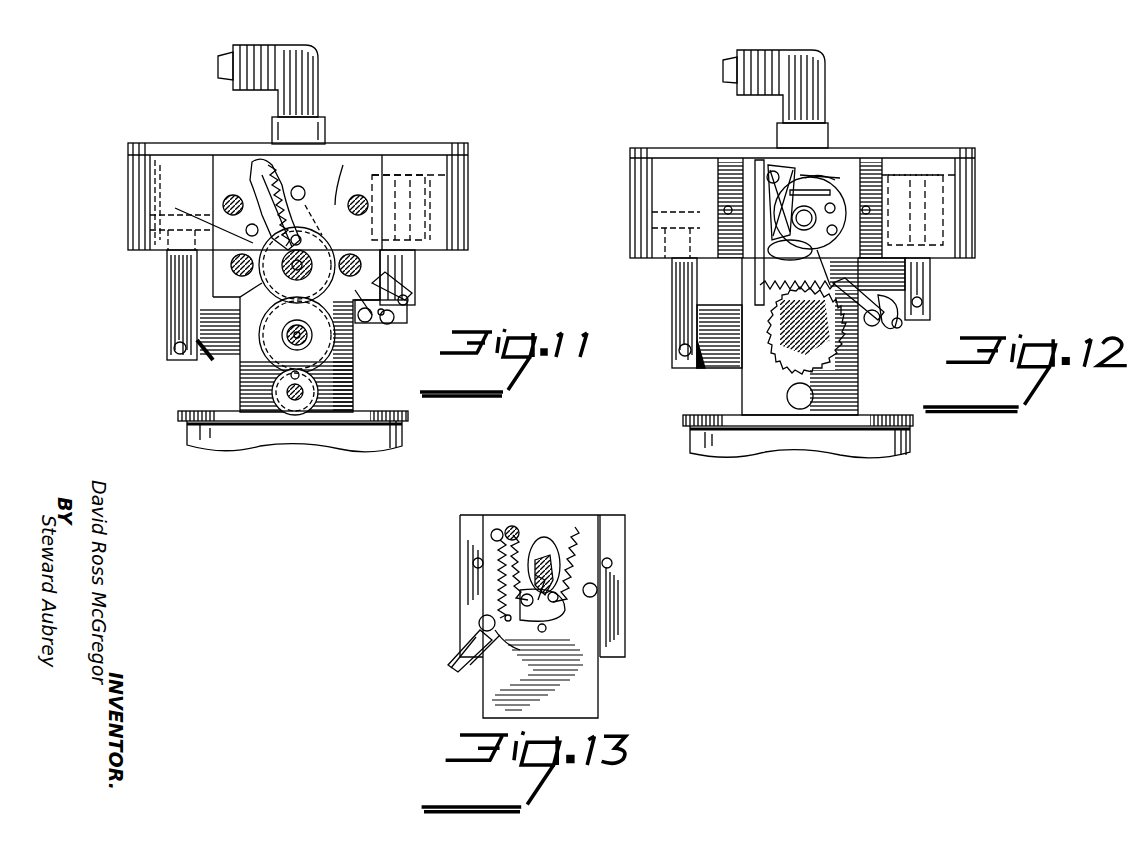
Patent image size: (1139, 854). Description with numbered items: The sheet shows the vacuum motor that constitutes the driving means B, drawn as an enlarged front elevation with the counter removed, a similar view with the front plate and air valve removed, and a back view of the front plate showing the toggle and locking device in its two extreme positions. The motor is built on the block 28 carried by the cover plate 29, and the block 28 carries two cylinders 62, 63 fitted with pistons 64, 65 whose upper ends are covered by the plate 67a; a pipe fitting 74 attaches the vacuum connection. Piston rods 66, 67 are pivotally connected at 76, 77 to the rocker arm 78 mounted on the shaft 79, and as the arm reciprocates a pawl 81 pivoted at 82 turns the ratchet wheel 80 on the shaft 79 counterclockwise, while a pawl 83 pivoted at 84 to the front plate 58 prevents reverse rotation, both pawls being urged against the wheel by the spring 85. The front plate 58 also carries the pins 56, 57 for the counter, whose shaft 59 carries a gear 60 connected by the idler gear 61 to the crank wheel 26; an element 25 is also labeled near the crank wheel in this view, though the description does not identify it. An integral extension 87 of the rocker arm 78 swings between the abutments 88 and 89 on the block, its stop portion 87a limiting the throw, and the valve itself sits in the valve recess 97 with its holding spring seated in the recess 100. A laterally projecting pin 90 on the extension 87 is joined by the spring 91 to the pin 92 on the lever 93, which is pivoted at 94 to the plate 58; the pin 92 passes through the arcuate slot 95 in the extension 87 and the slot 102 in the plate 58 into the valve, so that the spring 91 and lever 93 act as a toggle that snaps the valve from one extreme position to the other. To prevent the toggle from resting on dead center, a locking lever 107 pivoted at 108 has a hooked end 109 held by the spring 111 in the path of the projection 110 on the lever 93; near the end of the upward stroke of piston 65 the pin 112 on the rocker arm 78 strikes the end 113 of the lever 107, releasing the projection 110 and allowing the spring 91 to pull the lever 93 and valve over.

In FIG. 11, the pipe fitting 74 is at (285, 62).
In FIG. 12, the pipe fitting 74 is at (790, 65).
In FIG. 11, the laterally projecting pin 90 is at (270, 163).
In FIG. 12, the laterally projecting pin 90 is at (777, 170).
In FIG. 13, the laterally projecting pin 90 is at (505, 530).
In FIG. 11, the spring 91 is at (275, 185).
In FIG. 13, the spring 91 is at (522, 553).
In FIG. 11, the pin 92 is at (287, 240).
In FIG. 13, the pin 92 is at (528, 600).
In FIG. 11, the extension 87 is at (283, 232).
In FIG. 12, the extension 87 is at (805, 175).
In FIG. 12, the stop portion 87a is at (748, 172).
In FIG. 11, the lever 93 is at (305, 198).
In FIG. 13, the lever 93 is at (542, 553).
In FIG. 11, the front plate 58 is at (363, 170).
In FIG. 13, the front plate 58 is at (525, 527).
In FIG. 11, the plate 67a is at (430, 152).
In FIG. 12, the plate 67a is at (937, 157).
In FIG. 11, the cylinder 62 is at (140, 191).
In FIG. 11, the pivot 94 is at (302, 190).
In FIG. 13, the pivot 94 is at (560, 540).
In FIG. 11, the slot 102 is at (302, 233).
In FIG. 13, the slot 102 is at (557, 587).
In FIG. 11, the cylinder 63 is at (438, 190).
In FIG. 11, the piston 65 is at (432, 186).
In FIG. 12, the piston 65 is at (895, 200).
In FIG. 11, the arcuate slot 95 is at (175, 208).
In FIG. 12, the arcuate slot 95 is at (845, 250).
In FIG. 11, the gear 60 is at (312, 252).
In FIG. 11, the piston 64 is at (167, 235).
In FIG. 12, the piston 64 is at (668, 227).
In FIG. 11, the pin 56 is at (231, 268).
In FIG. 11, the pin 57 is at (362, 259).
In FIG. 11, the piston rod 66 is at (180, 300).
In FIG. 12, the piston rod 66 is at (680, 277).
In FIG. 11, the idler gear 61 is at (278, 313).
In FIG. 11, the piston rod 67 is at (420, 278).
In FIG. 12, the piston rod 67 is at (920, 273).
In FIG. 11, the locking lever 107 is at (385, 278).
In FIG. 13, the locking lever 107 is at (450, 655).
In FIG. 11, the pivotal connection 77 is at (418, 298).
In FIG. 12, the pivotal connection 77 is at (930, 302).
In FIG. 11, the pivot 82 is at (358, 312).
In FIG. 12, the pivot 82 is at (880, 323).
In FIG. 11, the end of locking lever 113 is at (378, 310).
In FIG. 13, the end of locking lever 113 is at (492, 620).
In FIG. 11, the pawl 81 is at (372, 322).
In FIG. 12, the pawl 81 is at (853, 312).
In FIG. 11, the rocker arm 78 is at (335, 305).
In FIG. 12, the rocker arm 78 is at (737, 350).
In FIG. 11, the pin 112 is at (392, 324).
In FIG. 12, the pin 112 is at (905, 332).
In FIG. 11, the block 28 is at (245, 397).
In FIG. 12, the block 28 is at (836, 186).
In FIG. 11, the shaft 59 is at (347, 350).
In FIG. 11, the pivotal connection 76 is at (167, 360).
In FIG. 12, the pivotal connection 76 is at (688, 325).
In FIG. 11, the cover plate 29 is at (388, 439).
In FIG. 12, the cover plate 29 is at (890, 445).
In FIG. 11, the crank wheel 26 is at (287, 403).
In FIG. 11, the shaft 25 is at (290, 373).
In FIG. 12, the valve recess 97 is at (827, 173).
In FIG. 12, the recess 100 is at (820, 197).
In FIG. 12, the abutment 88 is at (870, 185).
In FIG. 12, the abutment 89 is at (745, 177).
In FIG. 12, the pivot 84 is at (763, 243).
In FIG. 13, the pivot 84 is at (597, 587).
In FIG. 12, the pawl 83 is at (757, 262).
In FIG. 12, the ratchet wheel 80 is at (783, 352).
In FIG. 12, the shaft 79 is at (800, 333).
In FIG. 12, the spring 85 is at (805, 300).
In FIG. 13, the spring 111 is at (500, 583).
In FIG. 13, the pivot 108 is at (482, 622).
In FIG. 13, the hooked end 109 is at (532, 618).
In FIG. 13, the projection 110 is at (528, 613).
In FIG. 11, the driving means B is at (247, 121).
In FIG. 12, the driving means B is at (687, 115).